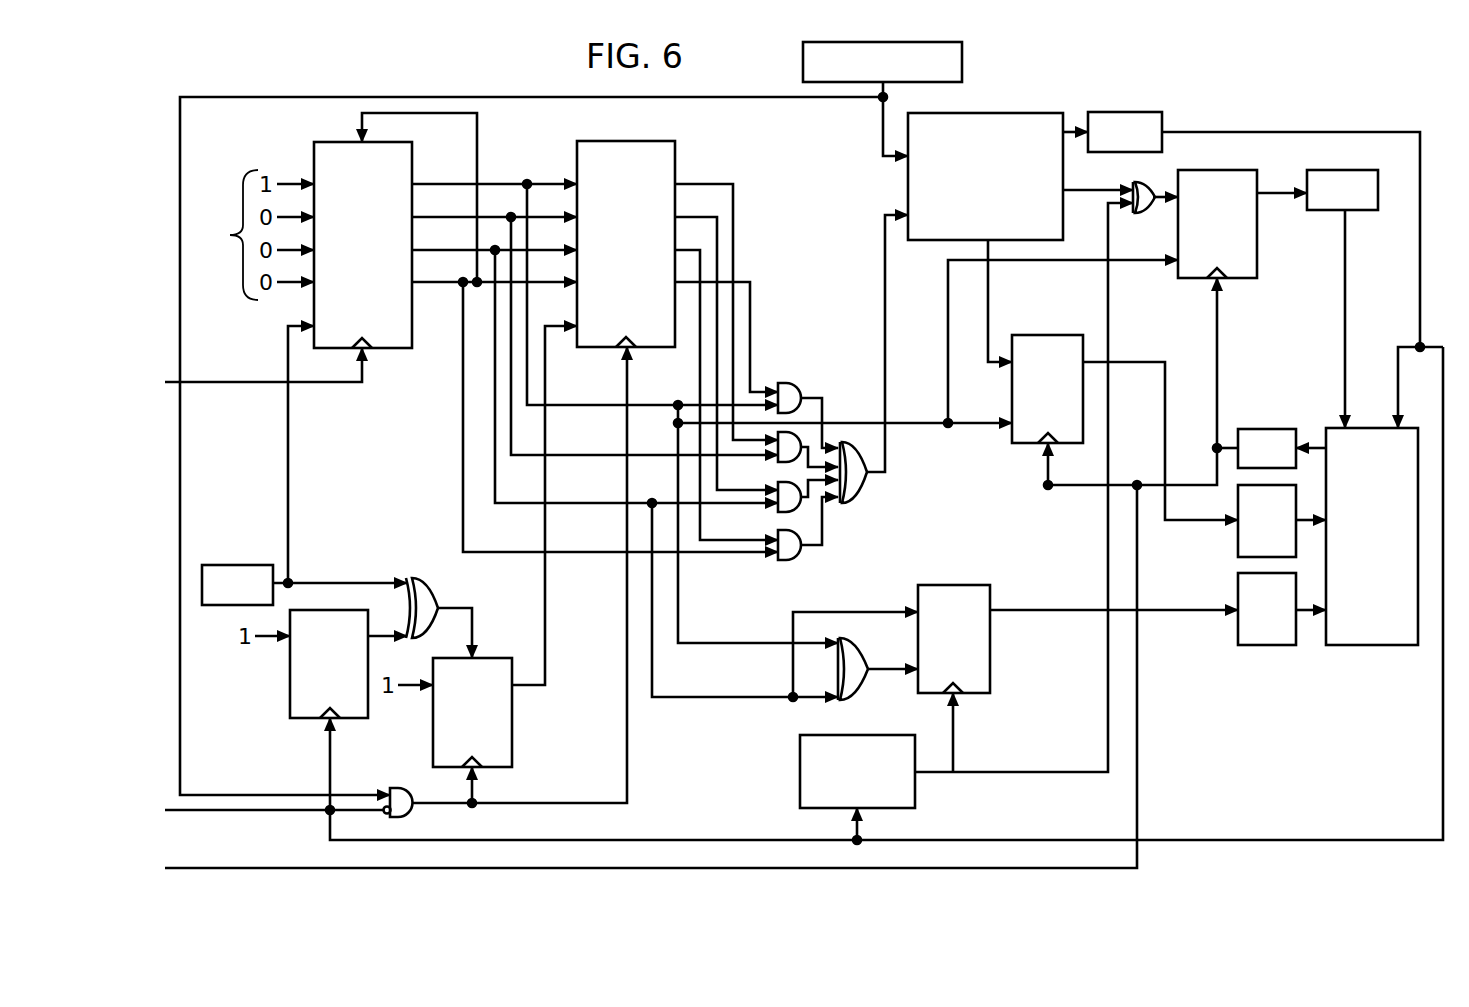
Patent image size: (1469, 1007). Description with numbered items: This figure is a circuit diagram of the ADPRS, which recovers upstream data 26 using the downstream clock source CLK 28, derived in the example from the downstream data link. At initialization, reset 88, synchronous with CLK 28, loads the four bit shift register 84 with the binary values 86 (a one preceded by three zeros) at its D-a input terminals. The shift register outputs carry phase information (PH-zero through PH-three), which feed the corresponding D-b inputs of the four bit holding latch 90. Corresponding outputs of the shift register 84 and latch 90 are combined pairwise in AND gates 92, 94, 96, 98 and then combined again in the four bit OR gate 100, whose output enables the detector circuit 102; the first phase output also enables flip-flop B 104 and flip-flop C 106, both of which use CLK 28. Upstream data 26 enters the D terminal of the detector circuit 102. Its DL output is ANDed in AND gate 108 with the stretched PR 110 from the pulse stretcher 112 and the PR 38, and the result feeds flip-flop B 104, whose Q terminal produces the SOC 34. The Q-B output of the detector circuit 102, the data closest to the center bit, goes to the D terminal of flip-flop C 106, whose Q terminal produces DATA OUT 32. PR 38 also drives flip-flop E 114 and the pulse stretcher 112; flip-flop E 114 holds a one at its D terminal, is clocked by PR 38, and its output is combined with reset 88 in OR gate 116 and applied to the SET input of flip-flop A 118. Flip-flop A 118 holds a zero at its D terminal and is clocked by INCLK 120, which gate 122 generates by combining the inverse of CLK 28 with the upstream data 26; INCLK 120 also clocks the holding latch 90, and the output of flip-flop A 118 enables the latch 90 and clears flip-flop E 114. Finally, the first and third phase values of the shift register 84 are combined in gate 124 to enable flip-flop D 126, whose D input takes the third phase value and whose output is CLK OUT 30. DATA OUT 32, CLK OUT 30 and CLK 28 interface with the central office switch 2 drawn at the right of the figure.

The central office switch 2 is at (1372, 645).
The upstream data 26 is at (962, 62).
The downstream clock source (CLK) 28 is at (1267, 429).
The CLK OUT 30 is at (1267, 645).
The DATA OUT 32 is at (1238, 545).
The SOC 34 is at (1365, 210).
The PR 38 is at (1133, 112).
The four bit shift register 84 is at (314, 150).
The binary values 0001 86 is at (228, 235).
The reset 88 is at (237, 565).
The four bit holding latch 90 is at (577, 150).
The AND gate 92 is at (790, 382).
The AND gate 94 is at (803, 436).
The AND gate 96 is at (798, 510).
The AND gate 98 is at (786, 562).
The four bit OR gate 100 is at (868, 487).
The detector circuit 102 is at (997, 113).
The flip-flop B 104 is at (1257, 252).
The flip-flop C 106 is at (1012, 445).
The AND gate 108 is at (1143, 214).
The stretched PR 110 is at (1024, 487).
The pulse stretcher 112 is at (800, 770).
The flip-flop E 114 is at (290, 678).
The OR gate 116 is at (440, 600).
The flip-flop A 118 is at (512, 722).
The INCLK 120 is at (519, 575).
The NAND gate 122 is at (398, 788).
The AND gate 124 is at (850, 698).
The flip-flop D 126 is at (953, 585).